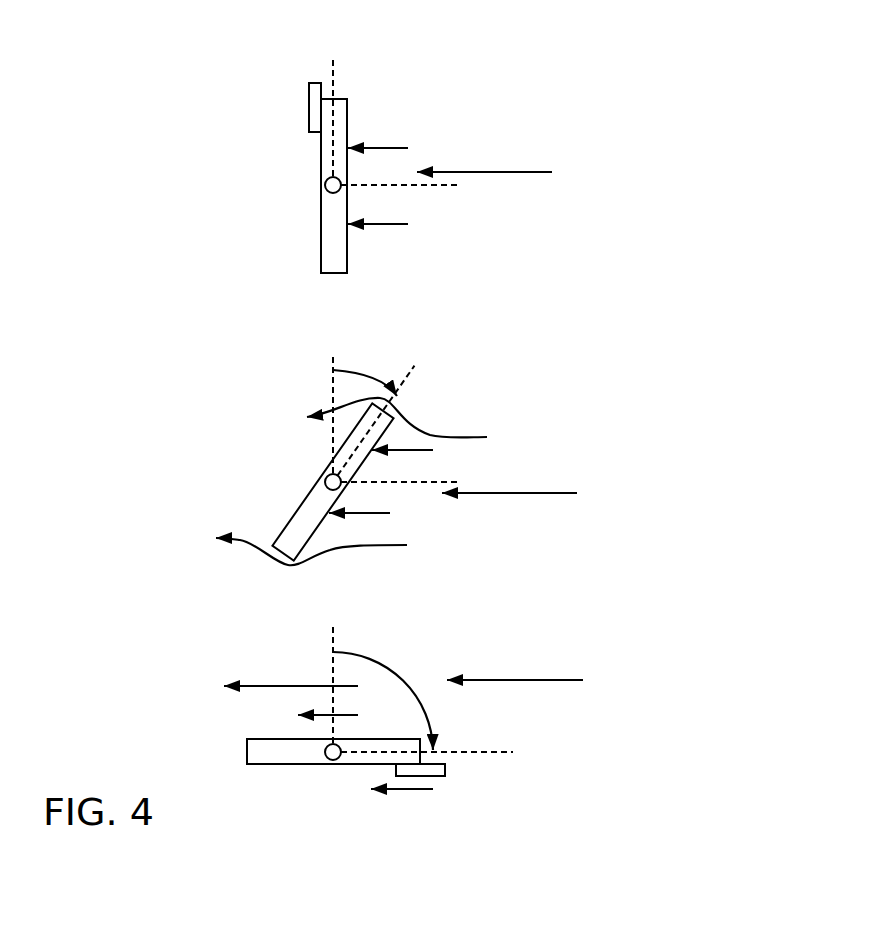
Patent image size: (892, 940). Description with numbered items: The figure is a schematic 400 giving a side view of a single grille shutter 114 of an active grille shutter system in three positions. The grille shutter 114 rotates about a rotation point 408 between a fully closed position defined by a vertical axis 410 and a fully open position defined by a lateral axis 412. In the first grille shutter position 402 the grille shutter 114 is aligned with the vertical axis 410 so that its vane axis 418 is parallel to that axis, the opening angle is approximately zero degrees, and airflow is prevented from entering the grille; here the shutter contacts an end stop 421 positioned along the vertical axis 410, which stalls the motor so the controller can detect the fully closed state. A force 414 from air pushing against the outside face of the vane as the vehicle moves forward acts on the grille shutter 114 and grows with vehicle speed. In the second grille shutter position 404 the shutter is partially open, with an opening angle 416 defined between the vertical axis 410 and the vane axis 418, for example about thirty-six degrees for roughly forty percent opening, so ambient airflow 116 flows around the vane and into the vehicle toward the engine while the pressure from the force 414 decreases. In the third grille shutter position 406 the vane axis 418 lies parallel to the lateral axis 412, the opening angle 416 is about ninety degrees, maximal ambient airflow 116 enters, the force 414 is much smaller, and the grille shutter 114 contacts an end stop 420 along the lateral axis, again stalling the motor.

The grille shutter 114 is at (348, 260).
The ambient airflow 116 is at (518, 173).
The schematic 400 is at (681, 46).
The first grille shutter position 402 is at (640, 172).
The second grille shutter position 404 is at (640, 500).
The third grille shutter position 406 is at (640, 742).
The rotation point 408 is at (325, 193).
The vertical axis 410 is at (332, 80).
The lateral axis 412 is at (437, 187).
The force 414 is at (388, 146).
The opening angle 416 is at (373, 372).
The vane axis 418 is at (407, 377).
The end stop 420 is at (447, 770).
The end stop 421 is at (309, 115).